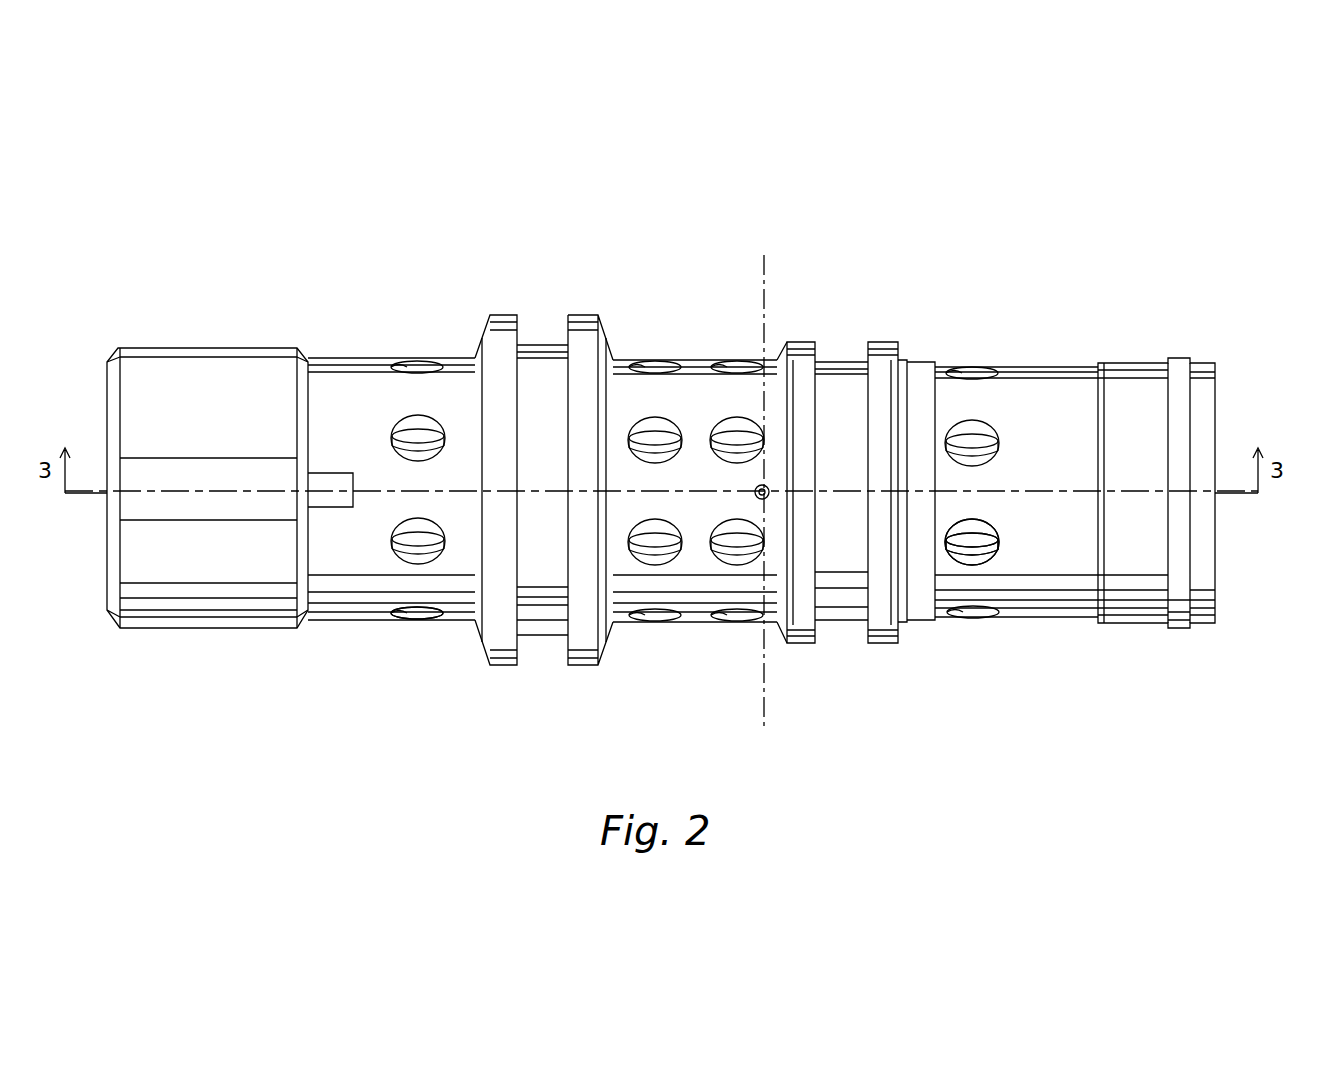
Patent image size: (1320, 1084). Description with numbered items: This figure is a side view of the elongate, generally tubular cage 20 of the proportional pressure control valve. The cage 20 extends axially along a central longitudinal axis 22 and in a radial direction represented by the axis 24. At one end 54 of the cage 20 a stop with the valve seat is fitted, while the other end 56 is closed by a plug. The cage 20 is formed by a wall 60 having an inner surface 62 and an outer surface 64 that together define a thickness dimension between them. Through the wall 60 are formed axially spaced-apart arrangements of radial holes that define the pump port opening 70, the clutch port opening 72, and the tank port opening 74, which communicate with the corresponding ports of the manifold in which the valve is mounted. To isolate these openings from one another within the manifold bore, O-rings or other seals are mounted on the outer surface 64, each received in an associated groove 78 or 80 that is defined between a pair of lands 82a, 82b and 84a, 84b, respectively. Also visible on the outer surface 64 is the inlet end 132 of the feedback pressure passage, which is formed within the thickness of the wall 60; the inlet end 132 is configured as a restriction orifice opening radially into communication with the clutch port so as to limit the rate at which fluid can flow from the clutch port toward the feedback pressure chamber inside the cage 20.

The cage 20 is at (1195, 249).
The central longitudinal axis 22 is at (225, 490).
The radial axis 24 is at (764, 705).
The end of the cage 54 is at (92, 368).
The other end of the cage 56 is at (1215, 590).
The wall 60 is at (975, 560).
The inner surface 62 is at (985, 455).
The outer surface 64 is at (328, 403).
The pump port opening 70 is at (968, 622).
The clutch port opening 72 is at (647, 622).
The tank port opening 74 is at (415, 618).
The groove 78 is at (840, 357).
The groove 80 is at (533, 333).
The land 82a is at (880, 342).
The land 82b is at (793, 342).
The land 84a is at (578, 315).
The land 84b is at (505, 315).
The inlet end 132 is at (762, 484).